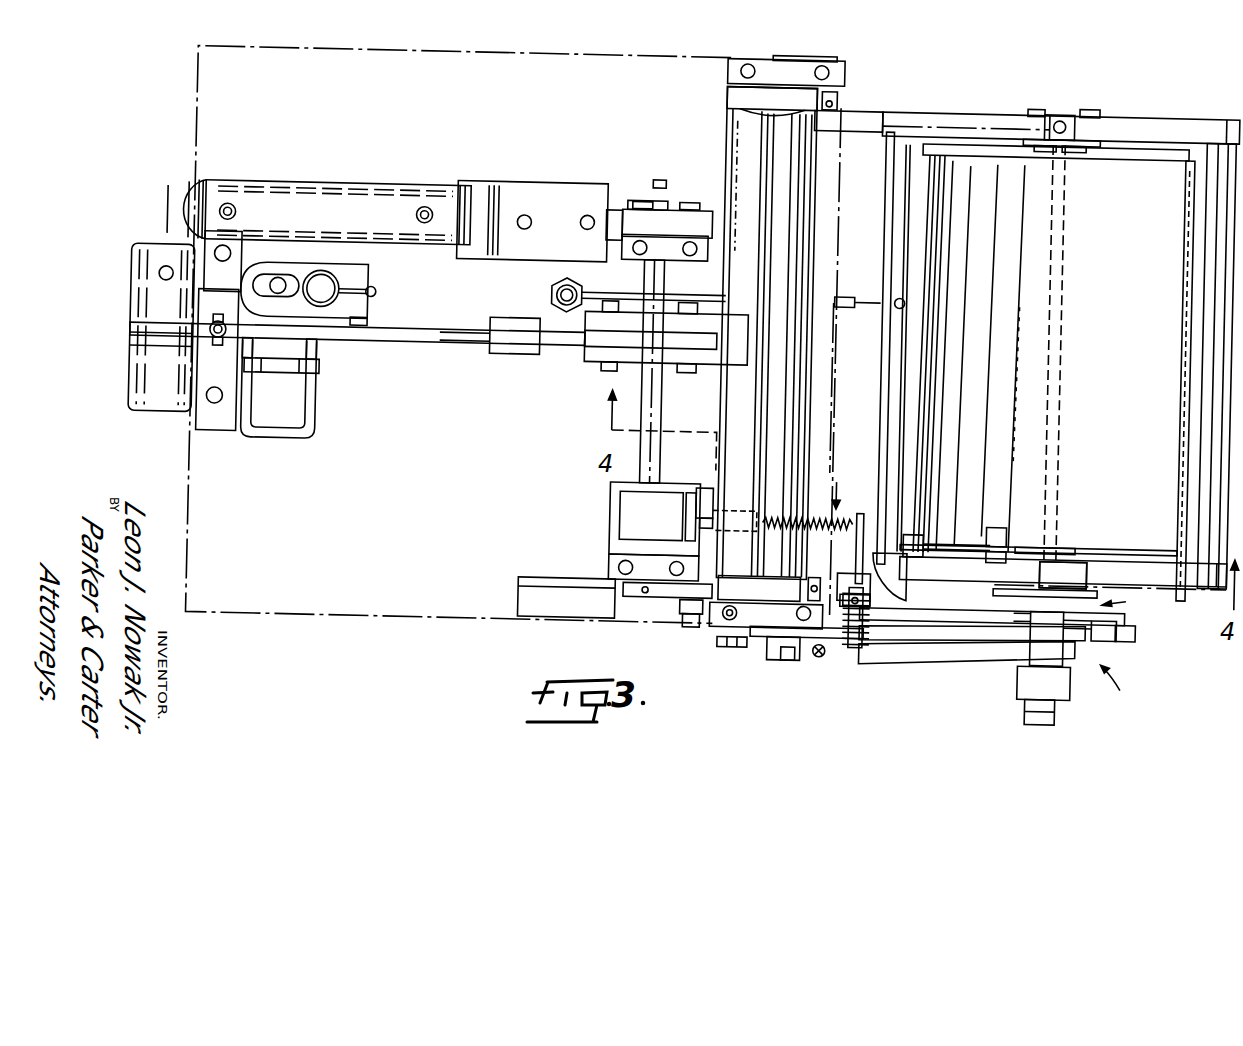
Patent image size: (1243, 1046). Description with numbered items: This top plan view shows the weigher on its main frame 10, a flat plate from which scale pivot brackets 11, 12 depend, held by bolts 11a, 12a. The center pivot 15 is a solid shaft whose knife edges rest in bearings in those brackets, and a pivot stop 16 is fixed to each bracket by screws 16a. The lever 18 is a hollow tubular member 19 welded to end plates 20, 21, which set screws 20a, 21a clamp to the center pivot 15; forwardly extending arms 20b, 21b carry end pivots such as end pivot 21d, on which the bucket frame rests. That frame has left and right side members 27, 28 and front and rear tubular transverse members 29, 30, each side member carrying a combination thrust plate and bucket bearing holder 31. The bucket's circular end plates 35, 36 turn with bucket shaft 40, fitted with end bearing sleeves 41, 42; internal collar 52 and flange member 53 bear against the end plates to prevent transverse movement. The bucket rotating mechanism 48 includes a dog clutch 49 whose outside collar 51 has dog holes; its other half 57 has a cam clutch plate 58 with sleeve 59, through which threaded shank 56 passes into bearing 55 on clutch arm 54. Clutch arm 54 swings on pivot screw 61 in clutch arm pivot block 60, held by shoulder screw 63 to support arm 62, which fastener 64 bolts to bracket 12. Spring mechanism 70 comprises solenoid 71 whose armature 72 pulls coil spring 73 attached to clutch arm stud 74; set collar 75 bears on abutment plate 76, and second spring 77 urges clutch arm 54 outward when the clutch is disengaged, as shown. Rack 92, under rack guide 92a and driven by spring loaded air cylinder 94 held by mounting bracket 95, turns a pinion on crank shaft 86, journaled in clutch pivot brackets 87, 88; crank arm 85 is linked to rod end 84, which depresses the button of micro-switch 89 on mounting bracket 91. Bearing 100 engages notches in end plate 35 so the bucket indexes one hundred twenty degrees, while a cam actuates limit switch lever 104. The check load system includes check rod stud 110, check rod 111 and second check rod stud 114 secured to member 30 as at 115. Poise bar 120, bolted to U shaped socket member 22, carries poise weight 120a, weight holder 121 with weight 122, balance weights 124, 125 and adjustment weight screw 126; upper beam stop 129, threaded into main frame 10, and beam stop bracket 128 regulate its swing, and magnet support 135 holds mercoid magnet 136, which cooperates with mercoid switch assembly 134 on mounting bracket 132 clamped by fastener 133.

The main frame 10 is at (592, 51).
The scale pivot bracket 11 is at (765, 60).
The bolt 11a is at (747, 64).
The adjustable pivot stop 16 is at (795, 56).
The screw 16a is at (805, 57).
The lever 18 is at (730, 150).
The hollow tubular member 19 is at (735, 128).
The end plate 21 is at (733, 97).
The set screw 21a is at (840, 101).
The forwardly extending arm 21b is at (851, 128).
The end pivot 21d is at (1060, 113).
The center pivot 15 is at (812, 209).
The rear tubular transverse member 30 is at (904, 135).
The left side member 27 is at (1186, 122).
The front tubular transverse member 29 is at (1215, 143).
The combination thrust plate and bucket bearing holder 31 is at (1090, 140).
The end bearing sleeve 42 is at (1050, 148).
The flange member 53 is at (1084, 150).
The circular end plate 36 is at (1135, 156).
The bucket shaft 40 is at (1062, 264).
The spring loaded air cylinder 94 is at (380, 186).
The air cylinder mounting bracket 95 is at (556, 182).
The rack 92 is at (616, 210).
The rack guide 92a is at (670, 216).
The clutch pivot bracket 88 is at (684, 262).
The crank shaft 86 is at (660, 408).
The U shaped socket member 22 is at (600, 362).
The check rod stud 110 is at (548, 295).
The check rod 111 is at (832, 312).
The second check rod stud 114 is at (870, 298).
The attachment of second check rod stud 115 is at (896, 306).
The poise bar 120 is at (418, 348).
The poise weight 120a is at (516, 350).
The inside balance weight 124 is at (160, 403).
The outside balance weight 125 is at (146, 297).
The adjustment weight screw 126 is at (159, 275).
The beam stop bracket 128 is at (232, 422).
The upper beam stop 129 is at (218, 348).
The mercoid switch mounting bracket 132 is at (370, 273).
The fastener 133 is at (278, 286).
The mercoid switch assembly 134 is at (325, 275).
The magnet support 135 is at (370, 321).
The mercoid magnet 136 is at (374, 291).
The weight holder 121 is at (280, 440).
The weight 122 is at (307, 366).
The solenoid 71 is at (614, 516).
The armature 72 is at (712, 490).
The coil spring 73 is at (826, 516).
The spring mechanism 70 is at (849, 489).
The clutch arm stud 74 is at (870, 505).
The end plate 20 is at (728, 584).
The set screw 20a is at (814, 584).
The forwardly extending arm 20b is at (840, 572).
The set collar 75 is at (896, 592).
The limit switch lever 104 is at (915, 540).
The bearing 100 is at (940, 548).
The internal collar 52 is at (1001, 544).
The end bearing sleeve 41 is at (1050, 560).
The right end wall 35 is at (1130, 550).
The right side member 28 is at (1178, 580).
The outside collar 51 is at (1000, 594).
The dog clutch 49 is at (1129, 601).
The clutch pivot bracket 87 is at (610, 564).
The micro-switch 89 is at (550, 614).
The mounting bracket 91 is at (526, 580).
The crank arm 85 is at (650, 598).
The rod end 84 is at (690, 606).
The scale pivot bracket 12 is at (708, 612).
The bolt 12a is at (728, 616).
The fastener 64 is at (730, 648).
The shoulder screw 63 is at (780, 660).
The clutch arm pivot block 60 is at (794, 652).
The pivot screw 61 is at (824, 656).
The abutment plate 76 is at (856, 645).
The second spring 77 is at (864, 645).
The support arm 62 is at (902, 656).
The clutch arm 54 is at (926, 660).
The other half of the dog clutch 57 is at (985, 622).
The sleeve 59 is at (1044, 636).
The cam clutch plate 58 is at (1136, 626).
The bearing 55 is at (1022, 692).
The threaded shank 56 is at (1040, 720).
The bucket rotating mechanism 48 is at (1124, 688).